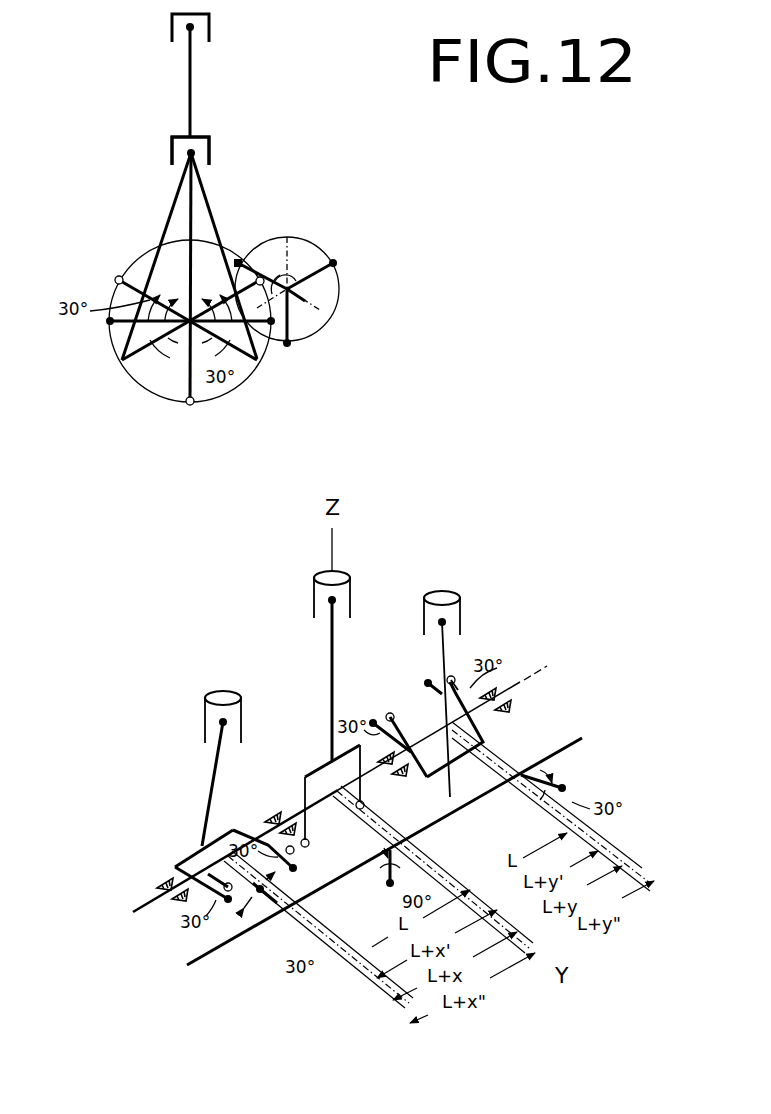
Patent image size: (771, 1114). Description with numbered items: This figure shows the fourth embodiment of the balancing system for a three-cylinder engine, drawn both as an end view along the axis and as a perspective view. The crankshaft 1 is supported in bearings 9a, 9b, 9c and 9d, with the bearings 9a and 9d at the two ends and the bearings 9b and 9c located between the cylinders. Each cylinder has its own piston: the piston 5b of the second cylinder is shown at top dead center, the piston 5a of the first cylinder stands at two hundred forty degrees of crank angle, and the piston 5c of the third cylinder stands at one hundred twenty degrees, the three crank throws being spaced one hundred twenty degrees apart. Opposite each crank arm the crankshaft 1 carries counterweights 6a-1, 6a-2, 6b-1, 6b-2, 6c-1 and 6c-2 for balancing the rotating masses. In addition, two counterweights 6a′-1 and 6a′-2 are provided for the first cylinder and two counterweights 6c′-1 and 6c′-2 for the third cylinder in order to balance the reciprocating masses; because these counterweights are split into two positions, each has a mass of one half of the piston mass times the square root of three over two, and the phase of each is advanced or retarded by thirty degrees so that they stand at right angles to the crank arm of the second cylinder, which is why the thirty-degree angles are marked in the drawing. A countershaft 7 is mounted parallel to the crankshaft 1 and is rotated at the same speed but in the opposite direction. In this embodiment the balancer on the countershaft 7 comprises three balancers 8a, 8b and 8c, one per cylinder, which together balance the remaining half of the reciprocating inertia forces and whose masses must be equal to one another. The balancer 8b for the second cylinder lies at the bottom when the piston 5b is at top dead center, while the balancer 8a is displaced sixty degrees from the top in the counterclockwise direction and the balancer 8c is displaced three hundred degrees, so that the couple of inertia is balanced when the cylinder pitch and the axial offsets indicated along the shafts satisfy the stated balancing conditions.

The crankshaft 1 is at (183, 345).
The piston of the first cylinder 5a is at (172, 150).
The piston of the second cylinder 5b is at (170, 25).
The piston of the third cylinder 5c is at (462, 616).
The counterweight 6a-1 is at (273, 262).
The counterweight 6a-2 is at (322, 900).
The counterweight 6a′-1 is at (272, 326).
The counterweight 6a′-2 is at (322, 920).
The counterweight 6b-1 is at (190, 405).
The counterweight 6b-2 is at (376, 814).
The counterweight 6c-1 is at (115, 280).
The counterweight 6c-2 is at (455, 678).
The counterweight 6c′-1 is at (110, 325).
The counterweight 6c′-2 is at (428, 681).
The countershaft 7 is at (304, 258).
The balancer 8a is at (238, 258).
The balancer 8b is at (292, 344).
The balancer 8c is at (336, 264).
The bearing 9a is at (158, 880).
The bearing 9b is at (272, 812).
The bearing 9c is at (405, 778).
The bearing 9d is at (510, 706).